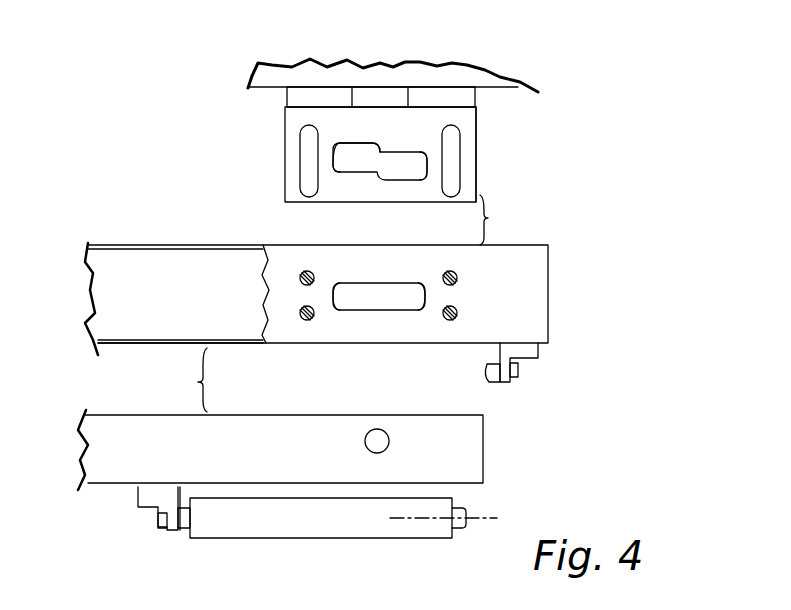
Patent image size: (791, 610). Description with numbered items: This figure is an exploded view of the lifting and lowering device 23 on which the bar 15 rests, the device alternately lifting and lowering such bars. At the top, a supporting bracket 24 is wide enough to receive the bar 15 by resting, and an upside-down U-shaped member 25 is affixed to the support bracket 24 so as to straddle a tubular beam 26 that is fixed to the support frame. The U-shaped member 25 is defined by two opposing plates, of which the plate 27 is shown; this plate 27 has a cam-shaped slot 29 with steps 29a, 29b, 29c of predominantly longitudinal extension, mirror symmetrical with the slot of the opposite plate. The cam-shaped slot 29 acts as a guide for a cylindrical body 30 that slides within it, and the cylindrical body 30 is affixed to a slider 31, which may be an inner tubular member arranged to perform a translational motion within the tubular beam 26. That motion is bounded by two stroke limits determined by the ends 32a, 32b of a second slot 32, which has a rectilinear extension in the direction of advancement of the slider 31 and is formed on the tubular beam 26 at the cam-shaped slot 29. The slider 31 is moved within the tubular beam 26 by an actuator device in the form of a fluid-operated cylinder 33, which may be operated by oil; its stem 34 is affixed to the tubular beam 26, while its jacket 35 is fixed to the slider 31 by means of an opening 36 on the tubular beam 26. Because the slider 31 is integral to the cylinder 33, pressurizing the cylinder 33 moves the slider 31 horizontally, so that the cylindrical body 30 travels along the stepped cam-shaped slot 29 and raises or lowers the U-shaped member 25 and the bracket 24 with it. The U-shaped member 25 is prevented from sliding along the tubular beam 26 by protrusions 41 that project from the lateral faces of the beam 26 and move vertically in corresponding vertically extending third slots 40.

The bar 15 is at (433, 77).
The lifting and lowering device 23 is at (587, 203).
The supporting bracket 24 is at (302, 100).
The upside-down U-shaped member 25 is at (477, 135).
The tubular beam 26 is at (533, 290).
The plate 27 is at (330, 195).
The cam-shaped slot 29 is at (387, 179).
The step 29a is at (377, 162).
The step 29b is at (342, 155).
The step 29c is at (420, 170).
The cylindrical body 30 is at (380, 438).
The slider 31 is at (472, 448).
The second slot 32 is at (383, 300).
The end of second slot 32a is at (330, 308).
The end of second slot 32b is at (427, 312).
The fluid-operated cylinder 33 is at (320, 525).
The stem 34 is at (467, 510).
The jacket 35 is at (212, 540).
The opening 36 is at (155, 345).
The third slot 40 is at (305, 158).
The protrusion 41 is at (307, 323).